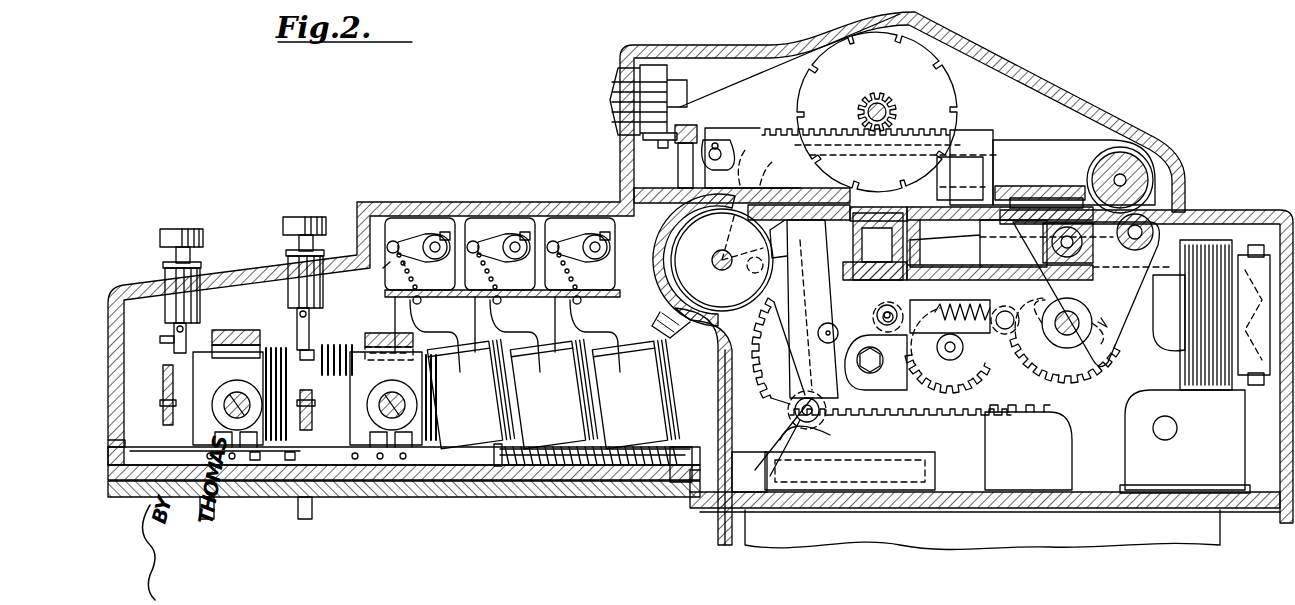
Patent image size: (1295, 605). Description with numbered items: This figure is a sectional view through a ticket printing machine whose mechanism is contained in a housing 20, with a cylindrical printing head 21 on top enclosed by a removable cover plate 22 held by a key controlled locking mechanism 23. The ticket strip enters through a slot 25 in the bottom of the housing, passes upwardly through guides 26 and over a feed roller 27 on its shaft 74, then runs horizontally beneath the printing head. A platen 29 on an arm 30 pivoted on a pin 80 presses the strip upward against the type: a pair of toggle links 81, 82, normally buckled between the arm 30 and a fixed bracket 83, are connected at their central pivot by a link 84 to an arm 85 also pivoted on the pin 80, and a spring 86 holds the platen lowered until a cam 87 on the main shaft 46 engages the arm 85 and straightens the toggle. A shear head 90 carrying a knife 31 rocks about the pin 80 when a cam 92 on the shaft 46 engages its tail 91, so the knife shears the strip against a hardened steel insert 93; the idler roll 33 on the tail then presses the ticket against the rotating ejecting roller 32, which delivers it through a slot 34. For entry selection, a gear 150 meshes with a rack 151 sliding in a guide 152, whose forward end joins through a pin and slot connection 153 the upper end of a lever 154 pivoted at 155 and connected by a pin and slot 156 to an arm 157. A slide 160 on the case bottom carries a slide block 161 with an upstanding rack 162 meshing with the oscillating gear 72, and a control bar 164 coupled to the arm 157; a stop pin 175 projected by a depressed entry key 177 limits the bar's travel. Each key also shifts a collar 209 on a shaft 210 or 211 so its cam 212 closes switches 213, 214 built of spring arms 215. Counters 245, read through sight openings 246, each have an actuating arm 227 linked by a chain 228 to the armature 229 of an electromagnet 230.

The housing 20 is at (602, 497).
The printing head 21 is at (963, 99).
The cover plate 22 is at (1077, 88).
The key controlled locking mechanism 23 is at (622, 103).
The slot 25 is at (715, 480).
The guides 26 is at (718, 374).
The feed roller 27 is at (680, 247).
The platen 29 is at (812, 309).
The arm 30 is at (1023, 270).
The knife 31 is at (998, 185).
The ejecting roller 32 is at (1150, 173).
The ejecting roller 33 is at (1086, 294).
The slot 34 is at (1186, 197).
The main shaft 46 is at (1070, 327).
The gear 72 is at (819, 312).
The shaft 74 is at (722, 264).
The pin 80 is at (1085, 238).
The toggle link 81 is at (868, 297).
The toggle link 82 is at (845, 328).
The fixed bracket 83 is at (857, 362).
The link 84 is at (942, 305).
The arm 85 is at (1049, 305).
The spring 86 is at (927, 364).
The cam 87 is at (1102, 378).
The shear head 90 is at (1047, 186).
The tail 91 is at (1118, 300).
The cam 92 is at (1107, 327).
The hardened steel insert 93 is at (987, 197).
The gear 150 is at (886, 98).
The rack 151 is at (780, 130).
The guide 152 is at (818, 168).
The pin and slot connection 153 is at (720, 140).
The lever 154 is at (742, 165).
The pivot 155 is at (735, 257).
The pin and slot 156 is at (858, 423).
The arm 157 is at (785, 410).
The slide 160 is at (368, 480).
The slide block 161 is at (868, 470).
The rack 162 is at (1047, 456).
The control bar 164 is at (462, 465).
The stop pin 175 is at (243, 470).
The entry key 177 is at (172, 232).
The collar 209 is at (405, 420).
The shaft 210 is at (428, 377).
The shaft 211 is at (245, 398).
The cam 212 is at (205, 395).
The switch 213 is at (275, 350).
The switch 214 is at (285, 352).
The spring arms 215 is at (280, 395).
The actuating arm 227 is at (390, 265).
The chain 228 is at (404, 264).
The armature 229 is at (440, 322).
The electromagnet 230 is at (500, 355).
The counter 245 is at (609, 203).
The sight opening 246 is at (507, 203).